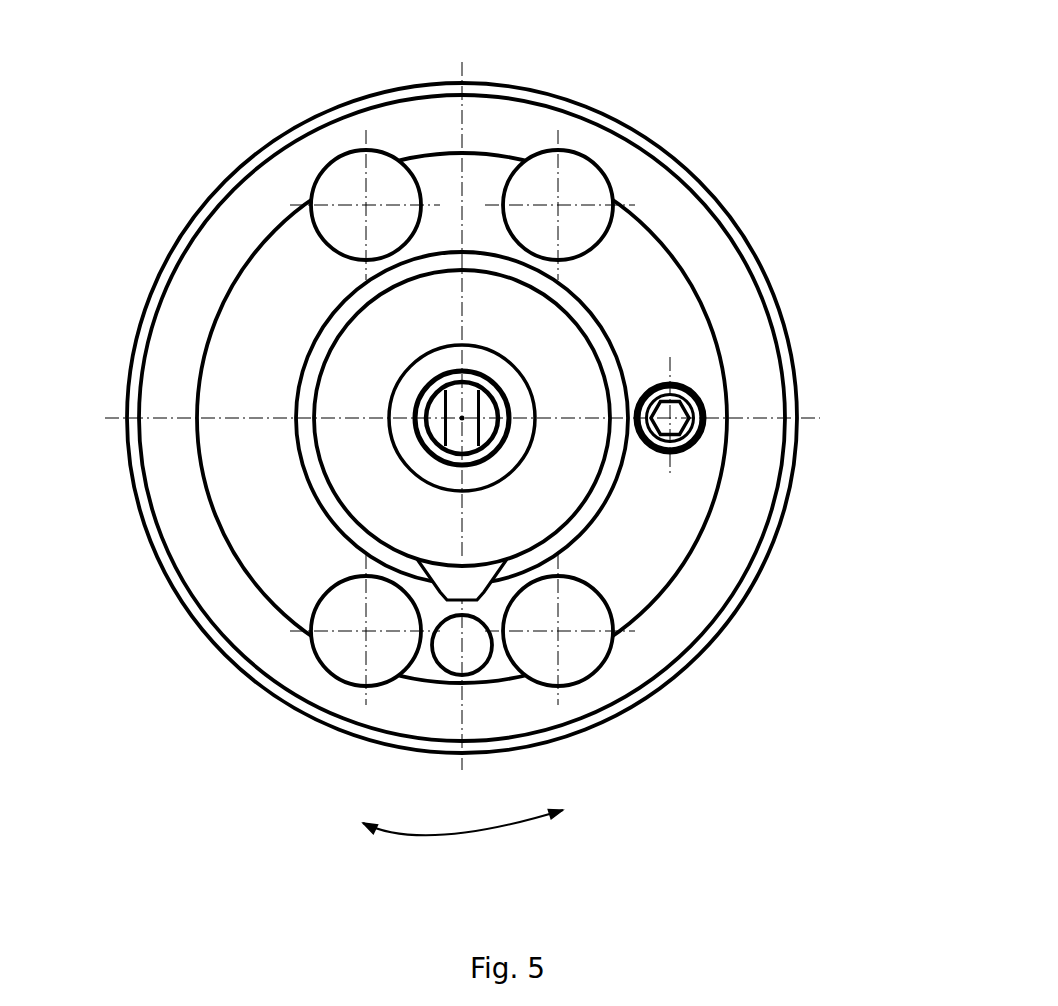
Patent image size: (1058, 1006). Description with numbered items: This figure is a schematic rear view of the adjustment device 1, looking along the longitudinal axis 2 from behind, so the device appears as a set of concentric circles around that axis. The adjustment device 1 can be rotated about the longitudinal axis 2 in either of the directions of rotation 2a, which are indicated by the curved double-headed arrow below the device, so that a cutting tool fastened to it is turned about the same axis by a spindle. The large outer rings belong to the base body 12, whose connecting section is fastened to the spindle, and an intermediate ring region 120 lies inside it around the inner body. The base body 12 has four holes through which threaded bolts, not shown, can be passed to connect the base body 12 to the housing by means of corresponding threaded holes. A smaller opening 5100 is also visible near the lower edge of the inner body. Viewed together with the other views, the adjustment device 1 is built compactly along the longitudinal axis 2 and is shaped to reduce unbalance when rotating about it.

The adjustment device 1 is at (850, 602).
The base body 12 is at (757, 397).
The housing flange ring 120 is at (640, 314).
The longitudinal axis 2 is at (417, 415).
The directions of rotation 2a is at (420, 834).
The pin hole 5100 is at (453, 582).